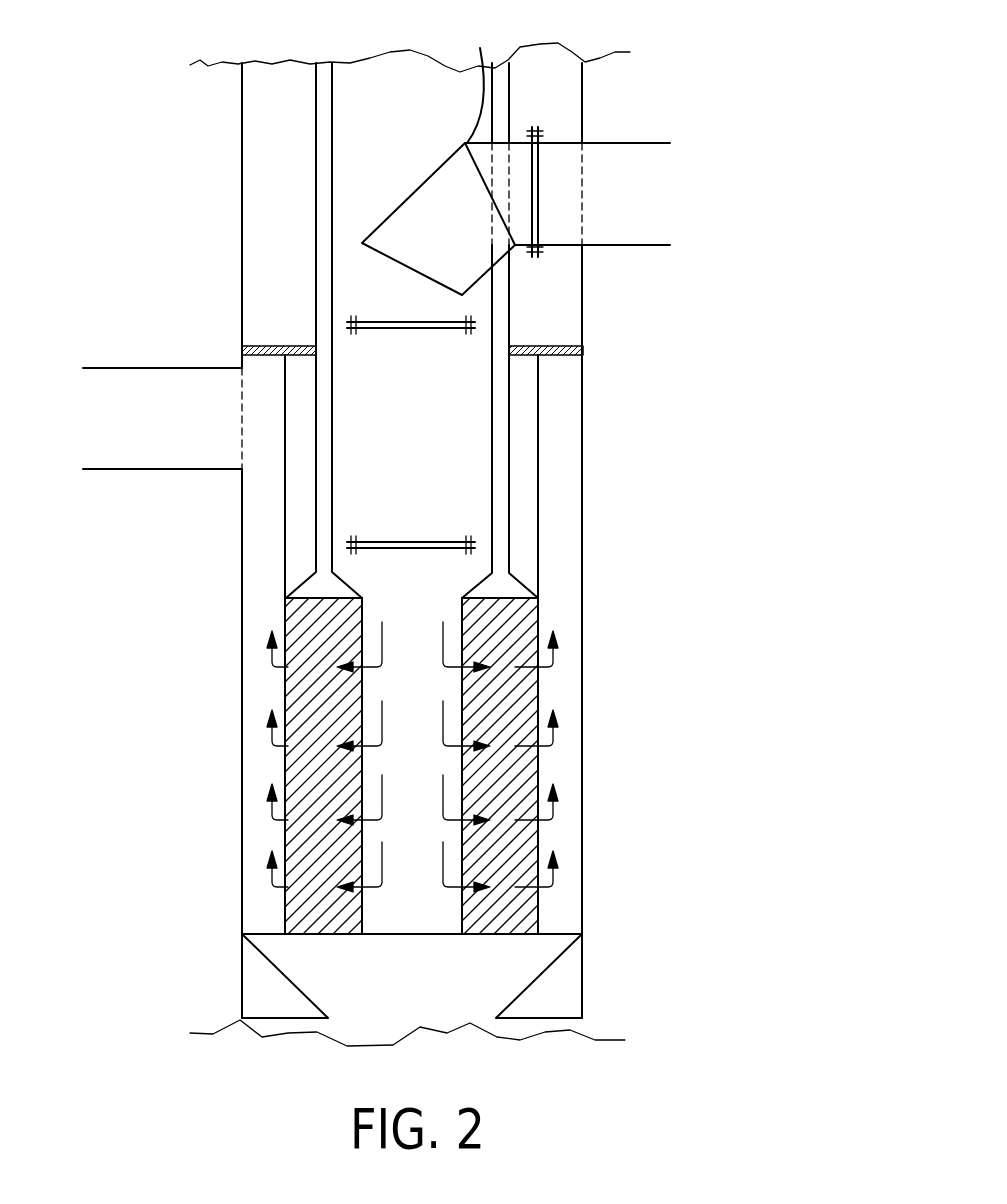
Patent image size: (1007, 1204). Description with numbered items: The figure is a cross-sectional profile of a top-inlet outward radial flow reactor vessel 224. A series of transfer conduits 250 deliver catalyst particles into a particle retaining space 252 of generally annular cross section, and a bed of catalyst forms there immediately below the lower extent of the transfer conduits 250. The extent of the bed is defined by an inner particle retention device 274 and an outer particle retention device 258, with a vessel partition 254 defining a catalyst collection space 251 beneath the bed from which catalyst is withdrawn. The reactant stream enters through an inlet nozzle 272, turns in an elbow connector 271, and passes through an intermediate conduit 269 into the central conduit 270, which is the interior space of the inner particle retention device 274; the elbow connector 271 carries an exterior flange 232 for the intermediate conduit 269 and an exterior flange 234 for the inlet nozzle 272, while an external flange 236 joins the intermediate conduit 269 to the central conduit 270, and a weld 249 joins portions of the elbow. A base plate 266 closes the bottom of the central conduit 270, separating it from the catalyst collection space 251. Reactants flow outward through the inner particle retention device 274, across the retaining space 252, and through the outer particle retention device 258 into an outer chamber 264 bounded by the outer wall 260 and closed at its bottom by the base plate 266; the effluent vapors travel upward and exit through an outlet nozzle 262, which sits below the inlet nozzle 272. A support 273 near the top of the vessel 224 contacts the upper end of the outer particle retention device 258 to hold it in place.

The vessel 224 is at (703, 545).
The exterior flange 232 is at (390, 318).
The exterior flange 234 is at (538, 217).
The external flange 236 is at (412, 538).
The weld 249 is at (483, 78).
The transfer conduits 250 is at (333, 108).
The catalyst collection space 251 is at (462, 993).
The particle retaining space 252 is at (350, 613).
The vessel partition 254 is at (254, 978).
The outer particle retention device 258 is at (283, 623).
The outer wall 260 is at (585, 725).
The outlet nozzle 262 is at (121, 378).
The outer chamber 264 is at (573, 782).
The base plate 266 is at (413, 935).
The intermediate conduit 269 is at (422, 448).
The central conduit 270 is at (430, 804).
The elbow connector 271 is at (430, 190).
The inlet nozzle 272 is at (640, 152).
The support 273 is at (260, 345).
The inner particle retention device 274 is at (363, 690).